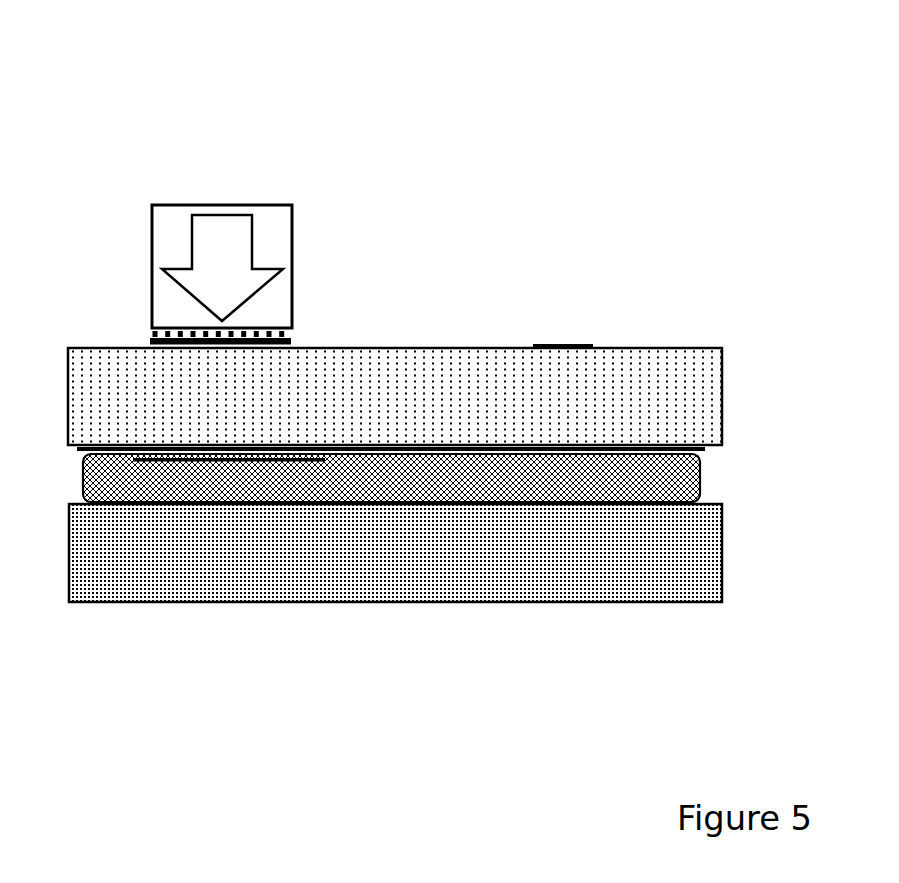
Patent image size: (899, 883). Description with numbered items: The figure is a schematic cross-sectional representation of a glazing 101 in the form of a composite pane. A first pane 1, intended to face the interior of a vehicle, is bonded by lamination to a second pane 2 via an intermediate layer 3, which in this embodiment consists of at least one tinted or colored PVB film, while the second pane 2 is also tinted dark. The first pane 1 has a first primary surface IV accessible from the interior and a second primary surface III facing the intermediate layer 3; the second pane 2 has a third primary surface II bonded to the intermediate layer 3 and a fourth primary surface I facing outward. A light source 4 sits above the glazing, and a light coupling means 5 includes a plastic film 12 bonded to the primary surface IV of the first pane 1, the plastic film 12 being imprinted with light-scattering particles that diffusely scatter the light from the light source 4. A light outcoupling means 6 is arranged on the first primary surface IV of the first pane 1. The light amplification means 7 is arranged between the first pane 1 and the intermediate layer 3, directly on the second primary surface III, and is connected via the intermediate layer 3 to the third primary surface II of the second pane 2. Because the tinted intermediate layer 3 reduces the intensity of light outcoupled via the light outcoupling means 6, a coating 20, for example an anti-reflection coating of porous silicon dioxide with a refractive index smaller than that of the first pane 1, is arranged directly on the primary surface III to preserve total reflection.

The glazing 101 is at (117, 102).
The first pane 1 is at (638, 388).
The second pane 2 is at (535, 572).
The intermediate layer 3 is at (543, 475).
The light source 4 is at (252, 205).
The light coupling means 5 is at (275, 330).
The light outcoupling means 6 is at (543, 344).
The light amplification means 7 is at (183, 460).
The plastic film 12 is at (151, 345).
The coating 20 is at (425, 450).
The fourth primary surface I is at (80, 604).
The third primary surface II is at (78, 498).
The second primary surface III is at (708, 453).
The first primary surface IV is at (706, 347).